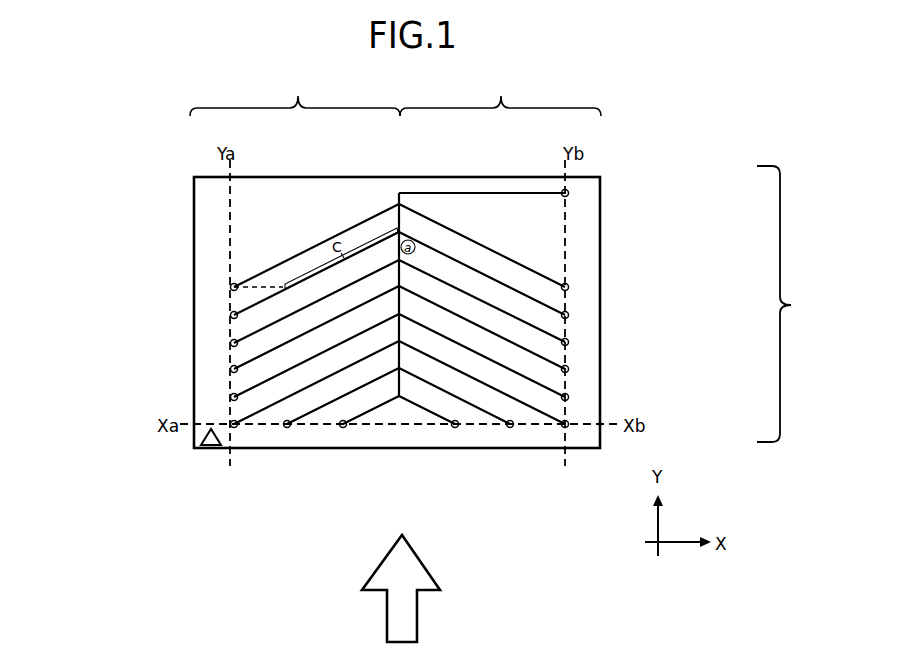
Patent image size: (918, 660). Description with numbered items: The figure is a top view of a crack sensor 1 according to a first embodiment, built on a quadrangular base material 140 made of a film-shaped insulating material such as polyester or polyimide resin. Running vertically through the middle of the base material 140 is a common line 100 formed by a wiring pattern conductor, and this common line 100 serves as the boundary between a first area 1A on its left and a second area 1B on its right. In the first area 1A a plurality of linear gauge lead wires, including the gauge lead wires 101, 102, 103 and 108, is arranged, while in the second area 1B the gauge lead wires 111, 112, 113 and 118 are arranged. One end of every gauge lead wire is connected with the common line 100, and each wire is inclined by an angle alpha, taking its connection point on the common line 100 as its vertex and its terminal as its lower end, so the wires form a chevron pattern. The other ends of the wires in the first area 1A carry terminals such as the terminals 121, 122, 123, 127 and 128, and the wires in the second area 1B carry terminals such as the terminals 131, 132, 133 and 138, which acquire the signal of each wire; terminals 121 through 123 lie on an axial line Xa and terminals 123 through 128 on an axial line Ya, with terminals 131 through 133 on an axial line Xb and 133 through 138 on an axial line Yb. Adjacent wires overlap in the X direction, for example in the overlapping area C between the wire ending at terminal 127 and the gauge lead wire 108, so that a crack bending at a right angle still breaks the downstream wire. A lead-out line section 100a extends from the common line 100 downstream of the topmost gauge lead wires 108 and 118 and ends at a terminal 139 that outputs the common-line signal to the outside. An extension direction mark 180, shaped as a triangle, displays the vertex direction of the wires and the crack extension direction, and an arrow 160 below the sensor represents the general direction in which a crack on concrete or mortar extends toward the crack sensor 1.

The crack sensor 1 is at (782, 304).
The first area 1A is at (295, 94).
The second area 1B is at (500, 95).
The common line 100 is at (469, 265).
The lead-out line section 100a is at (502, 159).
The gauge lead wire 101 is at (343, 476).
The gauge lead wire 102 is at (308, 467).
The gauge lead wire 103 is at (214, 370).
The gauge lead wire 108 is at (233, 224).
The gauge lead wire 111 is at (452, 476).
The gauge lead wire 112 is at (490, 467).
The gauge lead wire 113 is at (584, 373).
The gauge lead wire 118 is at (564, 227).
The terminal 121 is at (314, 469).
The terminal 122 is at (237, 463).
The terminal 123 is at (173, 406).
The terminal 127 is at (266, 276).
The terminal 128 is at (171, 269).
The terminal 131 is at (487, 471).
The terminal 132 is at (557, 463).
The terminal 133 is at (630, 406).
The terminal 138 is at (630, 270).
The terminal 139 is at (630, 171).
The base material 140 is at (397, 287).
The arrow 160 is at (438, 588).
The extension direction mark 180 is at (161, 458).